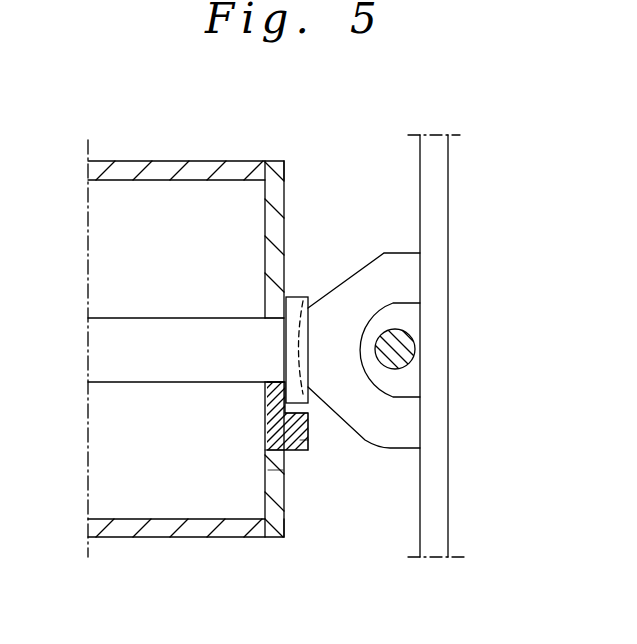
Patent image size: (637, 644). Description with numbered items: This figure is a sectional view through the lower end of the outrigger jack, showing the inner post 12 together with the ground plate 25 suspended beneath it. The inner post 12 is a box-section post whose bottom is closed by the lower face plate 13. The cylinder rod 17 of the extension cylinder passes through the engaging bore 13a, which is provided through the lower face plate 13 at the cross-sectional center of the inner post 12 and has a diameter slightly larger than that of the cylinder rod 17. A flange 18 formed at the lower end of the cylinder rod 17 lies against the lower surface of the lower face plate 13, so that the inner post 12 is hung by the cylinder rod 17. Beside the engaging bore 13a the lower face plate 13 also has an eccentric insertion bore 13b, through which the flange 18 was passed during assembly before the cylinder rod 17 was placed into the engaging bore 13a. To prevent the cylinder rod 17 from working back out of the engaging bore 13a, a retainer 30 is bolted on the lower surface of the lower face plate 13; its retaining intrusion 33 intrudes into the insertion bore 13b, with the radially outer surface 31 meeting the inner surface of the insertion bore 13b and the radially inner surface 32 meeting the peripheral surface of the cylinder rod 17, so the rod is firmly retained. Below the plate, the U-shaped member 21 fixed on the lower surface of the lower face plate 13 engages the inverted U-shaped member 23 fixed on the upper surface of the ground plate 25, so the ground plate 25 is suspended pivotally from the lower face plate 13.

The inner post 12 is at (213, 160).
The lower face plate 13 is at (282, 191).
The engaging bore 13a is at (256, 325).
The insertion bore 13b is at (264, 445).
The cylinder rod 17 is at (145, 335).
The flange 18 is at (305, 297).
The U-shaped member 21 is at (414, 348).
The inverted U-shaped member 23 is at (385, 266).
The ground plate 25 is at (435, 199).
The retainer 30 is at (309, 431).
The radially outer surface 31 is at (283, 474).
The radially inner surface 32 is at (272, 381).
The retaining intrusion 33 is at (265, 423).